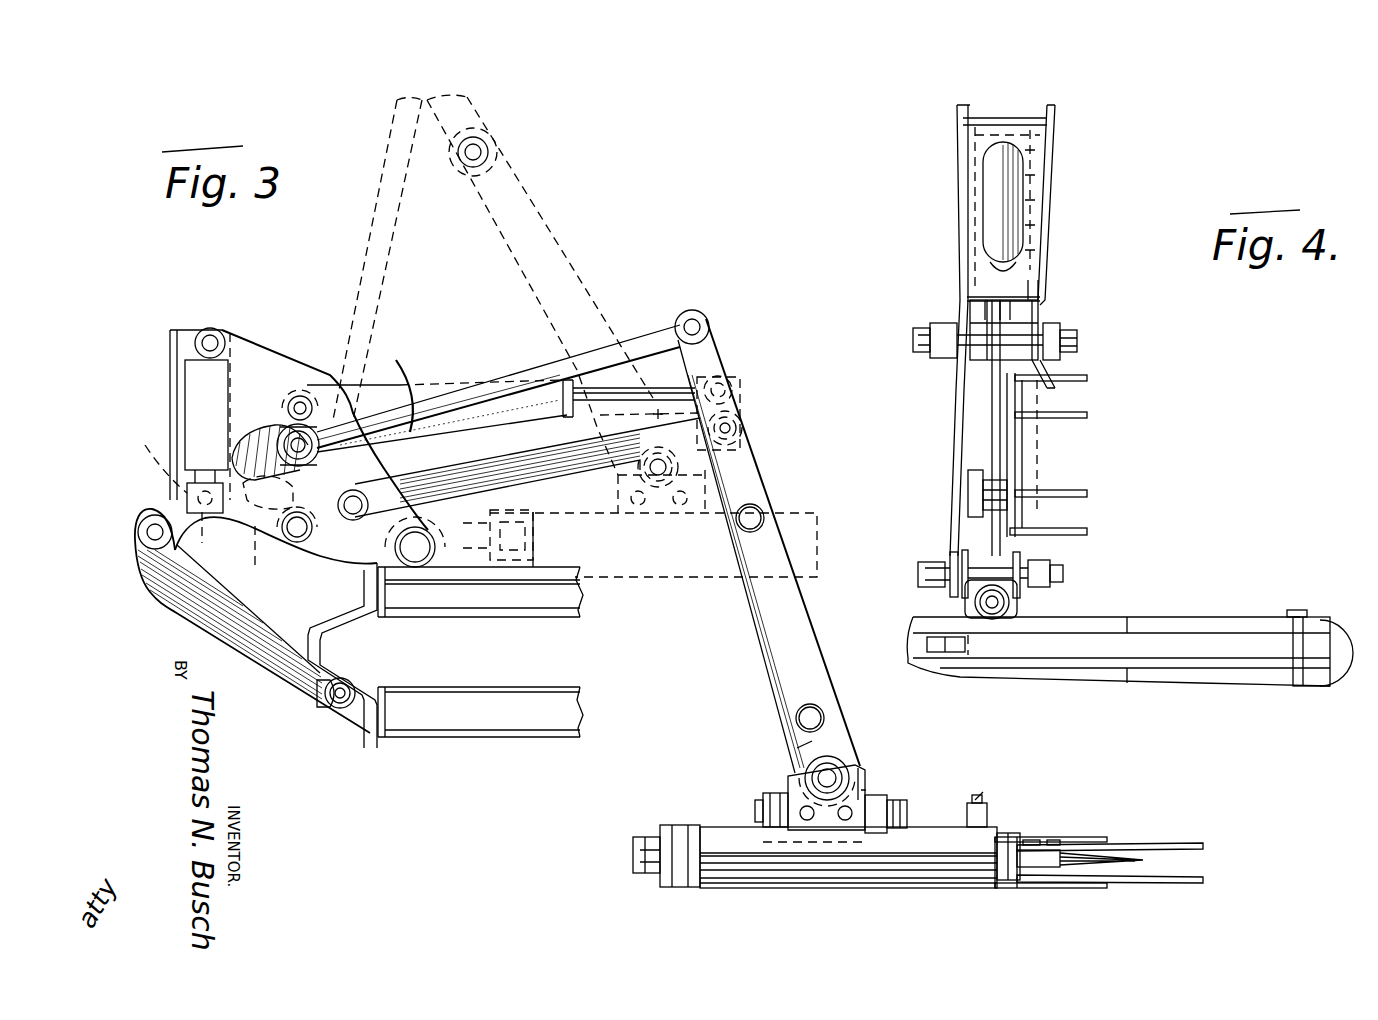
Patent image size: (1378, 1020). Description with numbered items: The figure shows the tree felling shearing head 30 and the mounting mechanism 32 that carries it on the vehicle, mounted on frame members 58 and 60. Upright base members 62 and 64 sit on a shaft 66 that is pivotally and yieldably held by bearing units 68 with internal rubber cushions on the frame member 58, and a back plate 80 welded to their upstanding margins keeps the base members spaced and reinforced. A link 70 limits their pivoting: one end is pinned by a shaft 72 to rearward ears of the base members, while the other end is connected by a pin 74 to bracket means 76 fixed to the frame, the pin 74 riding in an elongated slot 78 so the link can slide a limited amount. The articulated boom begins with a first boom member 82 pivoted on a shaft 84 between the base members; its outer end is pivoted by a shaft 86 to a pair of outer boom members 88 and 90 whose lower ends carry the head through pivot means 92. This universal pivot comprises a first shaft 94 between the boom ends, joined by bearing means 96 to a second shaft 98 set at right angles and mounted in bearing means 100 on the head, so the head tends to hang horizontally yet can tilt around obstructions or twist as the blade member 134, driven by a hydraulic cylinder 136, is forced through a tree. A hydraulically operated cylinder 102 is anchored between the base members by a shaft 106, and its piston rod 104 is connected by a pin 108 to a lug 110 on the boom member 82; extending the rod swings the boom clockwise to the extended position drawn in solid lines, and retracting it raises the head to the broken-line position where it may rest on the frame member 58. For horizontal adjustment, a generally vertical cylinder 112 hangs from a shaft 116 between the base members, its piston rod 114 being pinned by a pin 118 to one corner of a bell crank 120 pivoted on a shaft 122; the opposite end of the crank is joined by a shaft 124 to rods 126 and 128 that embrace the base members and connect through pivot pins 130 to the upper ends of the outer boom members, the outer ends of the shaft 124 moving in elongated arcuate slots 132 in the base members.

In FIG. 3, the shearing head 30 is at (1024, 830).
In FIG. 4, the shearing head 30 is at (1202, 617).
In FIG. 3, the mechanism 32 is at (768, 485).
In FIG. 3, the frame member 58 is at (550, 556).
In FIG. 3, the frame member 60 is at (520, 690).
In FIG. 3, the base member 62 is at (256, 345).
In FIG. 4, the base member 62 is at (965, 306).
In FIG. 4, the base member 64 is at (1040, 312).
In FIG. 3, the shaft 66 is at (430, 530).
In FIG. 3, the bearing units 68 is at (418, 570).
In FIG. 4, the bearing units 68 is at (1079, 333).
In FIG. 3, the link 70 is at (252, 632).
In FIG. 4, the link 70 is at (997, 433).
In FIG. 3, the shaft 72 is at (153, 514).
In FIG. 3, the pin 74 is at (338, 709).
In FIG. 4, the pin 74 is at (1022, 505).
In FIG. 3, the bracket means 76 is at (366, 727).
In FIG. 4, the bracket means 76 is at (1017, 462).
In FIG. 3, the elongated slot 78 is at (322, 692).
In FIG. 3, the back plate 80 is at (178, 332).
In FIG. 4, the back plate 80 is at (953, 250).
In FIG. 3, the first boom member 82 is at (547, 477).
In FIG. 3, the shaft 84 is at (362, 495).
In FIG. 3, the shaft 86 is at (745, 435).
In FIG. 3, the outer boom member 88 is at (818, 578).
In FIG. 4, the outer boom member 88 is at (955, 398).
In FIG. 4, the outer boom member 90 is at (1048, 433).
In FIG. 3, the pivot means 92 is at (866, 764).
In FIG. 4, the pivot means 92 is at (1035, 600).
In FIG. 3, the first shaft 94 is at (805, 775).
In FIG. 4, the first shaft 94 is at (1060, 575).
In FIG. 3, the bearing means 96 is at (875, 773).
In FIG. 4, the bearing means 96 is at (945, 590).
In FIG. 3, the second shaft 98 is at (762, 808).
In FIG. 4, the second shaft 98 is at (993, 614).
In FIG. 3, the bearing means 100 is at (890, 797).
In FIG. 3, the hydraulically operated cylinder 102 is at (402, 382).
In FIG. 3, the piston rod 104 is at (665, 312).
In FIG. 3, the shaft 106 is at (333, 355).
In FIG. 3, the pin 108 is at (732, 382).
In FIG. 3, the lug 110 is at (600, 431).
In FIG. 3, the hydraulically operated cylinder 112 is at (301, 395).
In FIG. 4, the hydraulically operated cylinder 112 is at (1010, 168).
In FIG. 3, the piston rod 114 is at (147, 440).
In FIG. 3, the shaft 116 is at (210, 330).
In FIG. 3, the pin 118 is at (202, 537).
In FIG. 3, the bell crank 120 is at (247, 585).
In FIG. 3, the shaft 122 is at (305, 541).
In FIG. 3, the shaft 124 is at (365, 395).
In FIG. 3, the rod 126 is at (553, 355).
In FIG. 4, the rod 126 is at (952, 108).
In FIG. 4, the rod 128 is at (887, 186).
In FIG. 3, the pivot pins 130 is at (692, 310).
In FIG. 3, the elongated arcuate slots 132 is at (230, 380).
In FIG. 3, the blade member 134 is at (1185, 793).
In FIG. 3, the hydraulic cylinder 136 is at (838, 905).